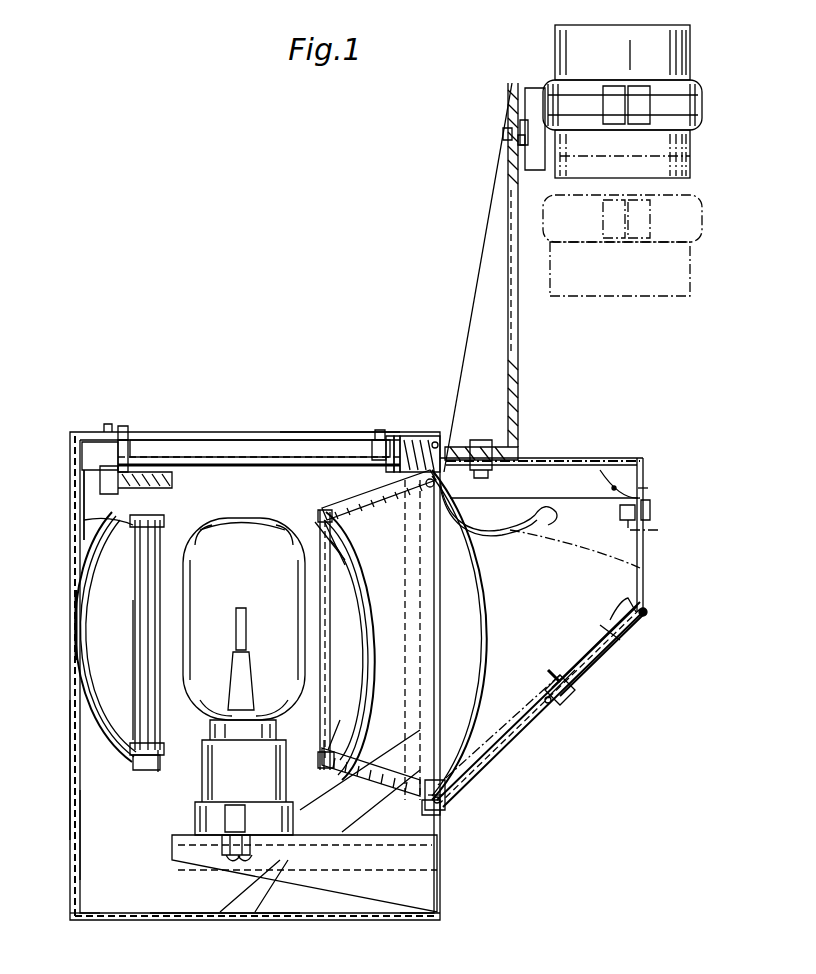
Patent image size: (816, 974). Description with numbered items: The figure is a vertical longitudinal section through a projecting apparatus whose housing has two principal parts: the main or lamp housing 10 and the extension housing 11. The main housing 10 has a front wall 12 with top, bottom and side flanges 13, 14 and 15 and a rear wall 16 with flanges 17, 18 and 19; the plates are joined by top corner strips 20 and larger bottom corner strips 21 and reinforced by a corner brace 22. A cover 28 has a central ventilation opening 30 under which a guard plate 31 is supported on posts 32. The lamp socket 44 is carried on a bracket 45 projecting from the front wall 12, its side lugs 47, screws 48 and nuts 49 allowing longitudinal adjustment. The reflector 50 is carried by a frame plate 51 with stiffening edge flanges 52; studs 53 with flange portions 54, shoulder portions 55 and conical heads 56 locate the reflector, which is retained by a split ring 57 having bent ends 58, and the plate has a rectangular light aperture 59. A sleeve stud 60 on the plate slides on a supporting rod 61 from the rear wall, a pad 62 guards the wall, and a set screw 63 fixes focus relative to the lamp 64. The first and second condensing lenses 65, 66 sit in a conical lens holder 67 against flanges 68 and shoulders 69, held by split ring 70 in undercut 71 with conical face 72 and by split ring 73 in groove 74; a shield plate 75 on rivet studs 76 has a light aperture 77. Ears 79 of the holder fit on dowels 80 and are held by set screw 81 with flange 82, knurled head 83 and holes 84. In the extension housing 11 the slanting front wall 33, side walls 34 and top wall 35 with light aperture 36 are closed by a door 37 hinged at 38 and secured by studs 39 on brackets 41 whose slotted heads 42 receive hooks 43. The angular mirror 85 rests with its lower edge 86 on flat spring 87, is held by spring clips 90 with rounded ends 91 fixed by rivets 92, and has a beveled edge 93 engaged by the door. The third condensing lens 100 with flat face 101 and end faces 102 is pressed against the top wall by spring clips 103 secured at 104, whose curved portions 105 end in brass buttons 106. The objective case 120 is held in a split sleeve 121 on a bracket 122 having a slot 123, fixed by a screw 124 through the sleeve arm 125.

The main housing 10 is at (270, 392).
The extension housing 11 is at (594, 396).
The front wall 12 is at (442, 856).
The top flange 13 is at (418, 436).
The bottom flange 14 is at (412, 920).
The side flange 15 is at (376, 598).
The rear wall 16 is at (70, 770).
The top flange 17 is at (84, 432).
The bottom flange 18 is at (78, 920).
The side flange 19 is at (80, 834).
The top corner strip 20 is at (286, 432).
The bottom corner strip 21 is at (190, 914).
The side corner brace 22 is at (360, 781).
The cover 28 is at (108, 425).
The central opening 30 is at (192, 438).
The guard plate 31 is at (238, 455).
The post 32 is at (124, 428).
The slanting lower front wall 33 is at (510, 742).
The side wall 34 is at (538, 594).
The top wall 35 is at (544, 456).
The light aperture 36 is at (602, 456).
The door 37 is at (643, 552).
The hinge 38 is at (648, 612).
The stud 39 is at (636, 520).
The bracket 41 is at (620, 512).
The slotted head 42 is at (650, 510).
The hook 43 is at (648, 488).
The lamp socket 44 is at (215, 770).
The bracket 45 is at (270, 862).
The side lug 47 is at (198, 815).
The screw 48 is at (240, 832).
The nut 49 is at (172, 848).
The reflector 50 is at (85, 676).
The frame plate 51 is at (160, 540).
The edge flange 52 is at (150, 693).
The stud 53 is at (158, 737).
The flange portion 54 is at (158, 772).
The shoulder portion 55 is at (145, 770).
The conical head 56 is at (130, 522).
The split ring 57 is at (133, 698).
The bent end 58 is at (100, 530).
The light aperture 59 is at (170, 628).
The sleeve stud 60 is at (128, 445).
The supporting rod 61 is at (174, 478).
The pad 62 is at (74, 632).
The set screw 63 is at (84, 500).
The lamp 64 is at (246, 522).
The first condensing lens 65 is at (366, 585).
The second condensing lens 66 is at (478, 584).
The lens holder 67 is at (425, 487).
The flange 68 is at (322, 516).
The cylindrical shoulder 69 is at (320, 512).
The split ring 70 is at (340, 520).
The circular undercut 71 is at (342, 510).
The conical face 72 is at (356, 510).
The split ring 73 is at (450, 795).
The undercut groove 74 is at (447, 800).
The shield plate 75 is at (322, 745).
The rivet stud 76 is at (445, 480).
The light aperture 77 is at (310, 612).
The ear 79 is at (428, 818).
The dowel 80 is at (436, 436).
The set screw 81 is at (397, 436).
The flange 82 is at (390, 436).
The knurled head 83 is at (380, 436).
The hole 84 is at (378, 430).
The angular mirror 85 is at (580, 660).
The lower edge 86 is at (568, 684).
The flat spring 87 is at (556, 668).
The spring clip 90 is at (570, 660).
The rounded end portion 91 is at (614, 616).
The rivet 92 is at (552, 704).
The beveled edge 93 is at (622, 640).
The third condensing lens 100 is at (560, 550).
The flat outer face 101 is at (660, 532).
The end face 102 is at (634, 460).
The spring clip 103 is at (476, 532).
The securing point 104 is at (492, 468).
The curved portion 105 is at (540, 525).
The brass button 106 is at (580, 490).
The cylindrical case 120 is at (572, 44).
The split sleeve 121 is at (665, 132).
The bracket 122 is at (487, 256).
The slot 123 is at (518, 340).
The screw 124 is at (508, 128).
The arm 125 is at (530, 92).